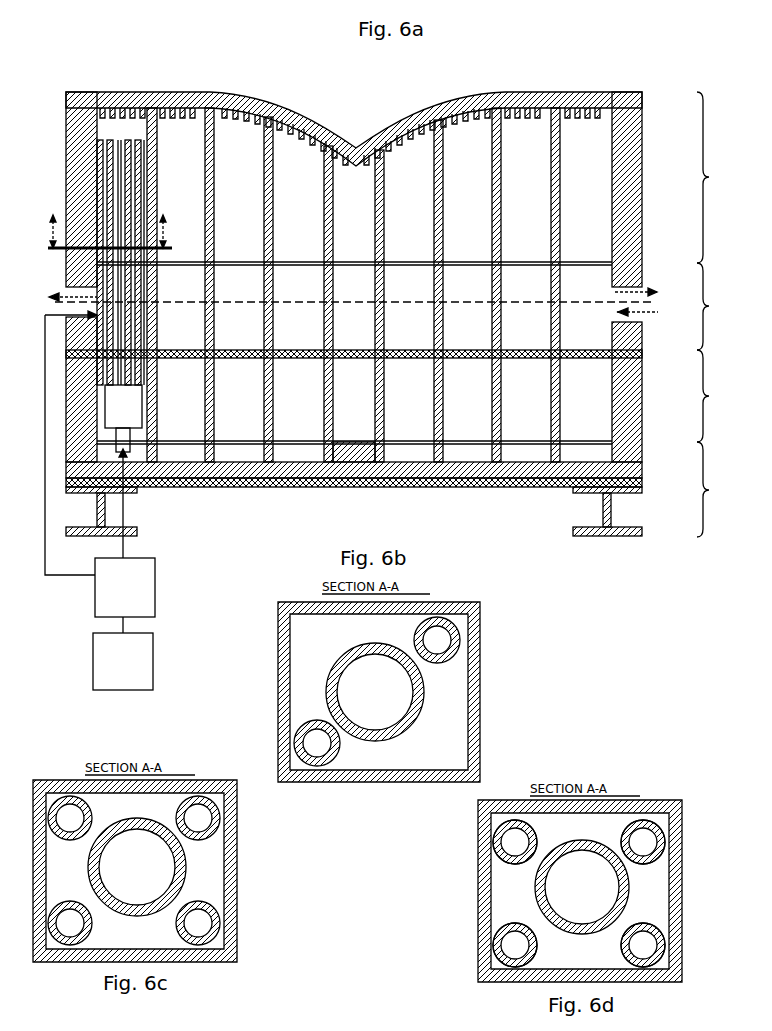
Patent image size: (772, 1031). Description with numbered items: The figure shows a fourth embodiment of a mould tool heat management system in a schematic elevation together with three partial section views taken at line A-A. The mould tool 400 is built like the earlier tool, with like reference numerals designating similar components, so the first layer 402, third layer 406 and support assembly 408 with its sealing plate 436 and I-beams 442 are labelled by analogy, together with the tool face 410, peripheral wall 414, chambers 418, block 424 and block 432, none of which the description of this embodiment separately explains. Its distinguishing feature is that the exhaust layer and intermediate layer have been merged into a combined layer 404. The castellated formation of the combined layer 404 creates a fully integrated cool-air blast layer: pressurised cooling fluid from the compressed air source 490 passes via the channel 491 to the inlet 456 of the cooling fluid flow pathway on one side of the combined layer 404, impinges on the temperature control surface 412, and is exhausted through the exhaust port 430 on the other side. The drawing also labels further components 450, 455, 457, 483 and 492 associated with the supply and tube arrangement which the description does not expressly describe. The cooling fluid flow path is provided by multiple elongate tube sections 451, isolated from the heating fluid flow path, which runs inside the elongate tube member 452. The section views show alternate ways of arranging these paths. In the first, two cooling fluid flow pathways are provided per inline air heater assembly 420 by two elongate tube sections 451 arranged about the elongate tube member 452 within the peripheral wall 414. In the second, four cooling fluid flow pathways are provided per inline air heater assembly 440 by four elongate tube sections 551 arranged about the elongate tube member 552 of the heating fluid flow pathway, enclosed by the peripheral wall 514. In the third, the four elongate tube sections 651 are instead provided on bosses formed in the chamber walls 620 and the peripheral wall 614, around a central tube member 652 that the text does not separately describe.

In FIG. 6A, the mould tool 400 is at (97, 62).
In FIG. 6A, the upper zone 402 is at (715, 177).
In FIG. 6A, the combined layer 404 is at (715, 306).
In FIG. 6A, the middle zone 406 is at (715, 396).
In FIG. 6A, the base zone 408 is at (715, 489).
In FIG. 6A, the top lid 410 is at (278, 118).
In FIG. 6A, the temperature control surface 412 is at (182, 125).
In FIG. 6A, the outer wall 414 is at (642, 122).
In FIG. 6B, the outer wall 414 is at (480, 675).
In FIG. 6A, the section plane A-A 418 is at (166, 211).
In FIG. 6A, the inline air heater assembly 420 is at (215, 198).
In FIG. 6A, the upper plate 424 is at (642, 268).
In FIG. 6A, the exhaust port 430 is at (657, 292).
In FIG. 6A, the lower partition 432 is at (642, 405).
In FIG. 6A, the lower plate 436 is at (642, 463).
In FIG. 6A, the inline air heater assembly 440 is at (642, 482).
In FIG. 6A, the support stand 442 is at (611, 503).
In FIG. 6A, the valve 450 is at (123, 421).
In FIG. 6B, the elongate tube sections 451 is at (437, 640).
In FIG. 6B, the elongate tube member 452 is at (375, 692).
In FIG. 6A, the outer tube 455 is at (140, 140).
In FIG. 6A, the inlet 456 is at (45, 315).
In FIG. 6A, the inner tube 457 is at (120, 140).
In FIG. 6A, the feed line 483 is at (130, 460).
In FIG. 6A, the compressed air source 490 is at (125, 595).
In FIG. 6A, the channel 491 is at (155, 550).
In FIG. 6A, the power supply 492 is at (123, 661).
In FIG. 6C, the outer wall 514 is at (237, 850).
In FIG. 6C, the elongate tube sections 551 is at (198, 815).
In FIG. 6C, the elongate tube member 552 is at (117, 867).
In FIG. 6D, the peripheral wall 614 is at (478, 940).
In FIG. 6D, the chamber walls 620 is at (682, 948).
In FIG. 6D, the elongate tube sections 651 is at (643, 835).
In FIG. 6D, the central tube 652 is at (560, 887).